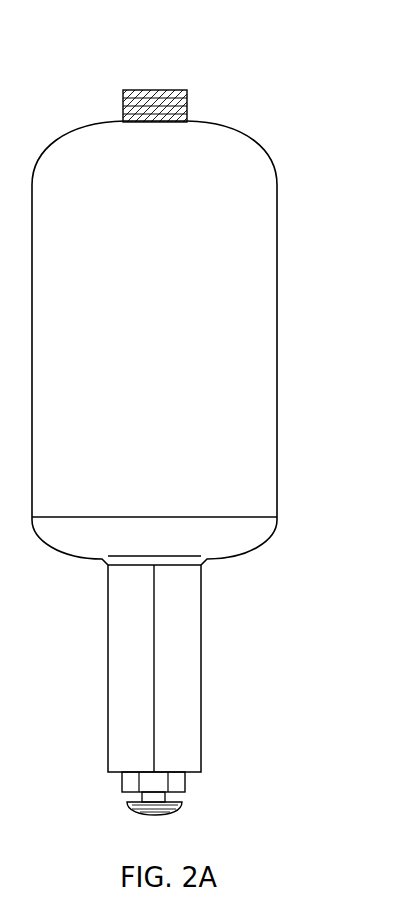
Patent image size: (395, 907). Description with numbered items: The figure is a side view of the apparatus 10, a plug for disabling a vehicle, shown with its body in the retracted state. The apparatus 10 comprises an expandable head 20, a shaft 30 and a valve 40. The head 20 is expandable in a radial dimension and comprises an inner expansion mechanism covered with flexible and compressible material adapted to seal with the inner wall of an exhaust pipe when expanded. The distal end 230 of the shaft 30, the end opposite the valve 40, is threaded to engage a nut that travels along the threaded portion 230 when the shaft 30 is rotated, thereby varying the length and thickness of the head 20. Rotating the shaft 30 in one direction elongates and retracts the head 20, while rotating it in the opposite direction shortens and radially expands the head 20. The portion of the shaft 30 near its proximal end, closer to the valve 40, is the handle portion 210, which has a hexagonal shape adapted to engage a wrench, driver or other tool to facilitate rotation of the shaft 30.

The apparatus 10 is at (84, 96).
The expandable head 20 is at (270, 293).
The distal end of shaft 230 is at (182, 98).
The shaft 30 is at (206, 690).
The handle portion 210 is at (175, 679).
The valve 40 is at (156, 792).